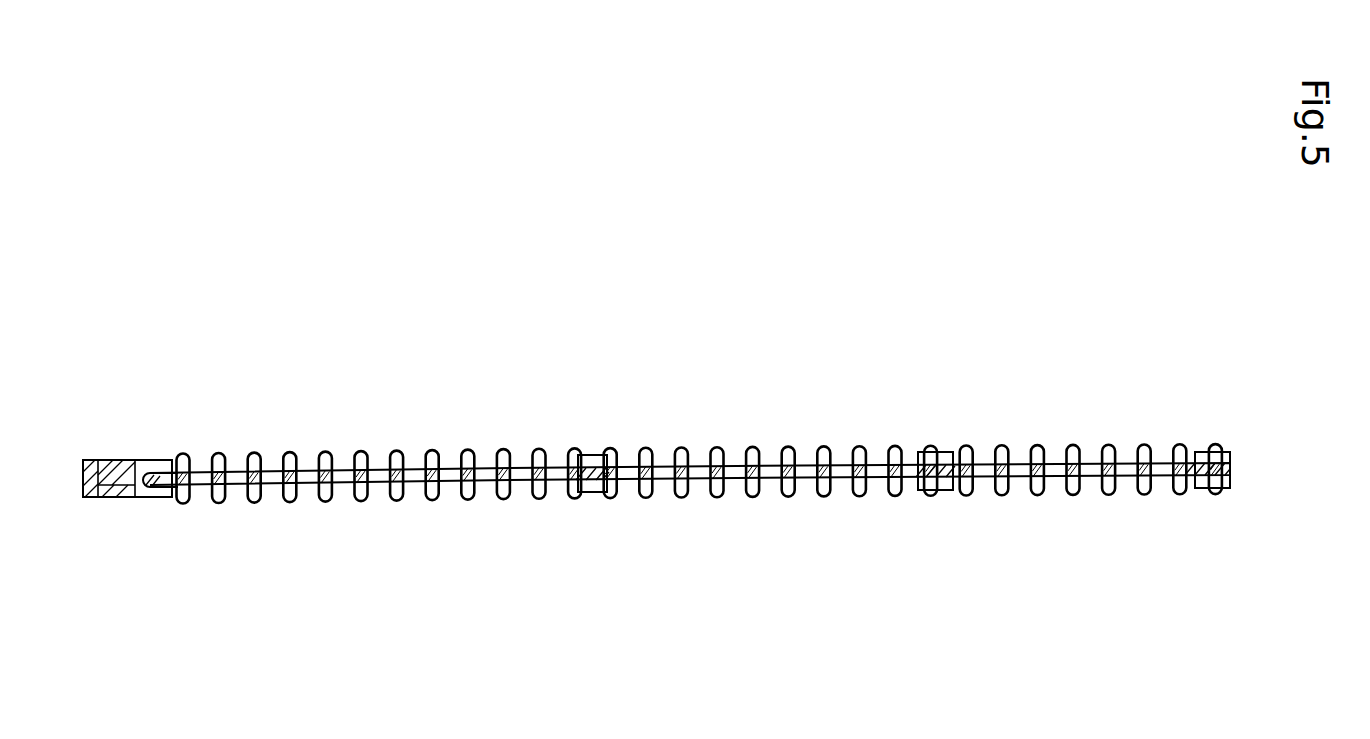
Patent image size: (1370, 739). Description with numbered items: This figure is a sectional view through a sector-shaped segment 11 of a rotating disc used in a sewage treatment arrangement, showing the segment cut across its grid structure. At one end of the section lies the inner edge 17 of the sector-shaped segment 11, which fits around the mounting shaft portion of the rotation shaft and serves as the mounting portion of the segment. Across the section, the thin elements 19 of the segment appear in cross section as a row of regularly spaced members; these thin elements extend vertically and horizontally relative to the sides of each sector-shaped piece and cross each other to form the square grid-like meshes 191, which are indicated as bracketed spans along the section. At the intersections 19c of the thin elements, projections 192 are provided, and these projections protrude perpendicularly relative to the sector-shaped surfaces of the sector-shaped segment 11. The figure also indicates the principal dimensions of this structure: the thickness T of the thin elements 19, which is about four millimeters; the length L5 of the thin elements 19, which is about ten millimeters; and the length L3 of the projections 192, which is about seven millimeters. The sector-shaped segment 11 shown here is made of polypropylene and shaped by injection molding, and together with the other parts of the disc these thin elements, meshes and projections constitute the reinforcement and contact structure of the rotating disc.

The sector-shaped segment 11 is at (1062, 421).
The inner edge 17 is at (92, 494).
The thin elements 19 is at (822, 463).
The intersections 19c is at (610, 497).
The square grid-like meshes 191 is at (933, 417).
The projections 192 is at (685, 452).
The thickness of thin elements T is at (343, 497).
The length of thin elements L5 is at (271, 537).
The length of projections L3 is at (1235, 474).